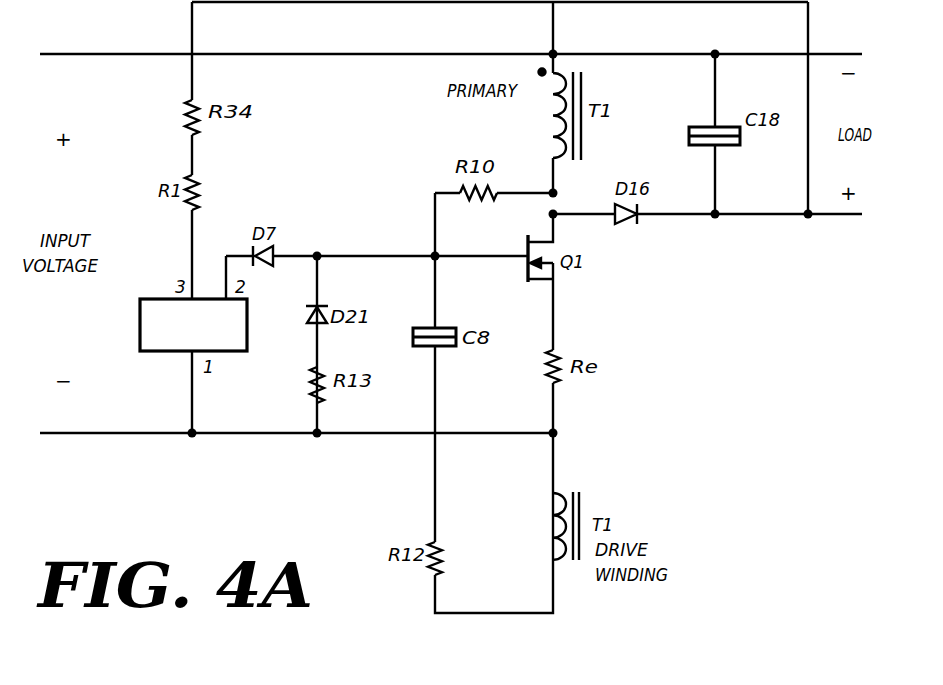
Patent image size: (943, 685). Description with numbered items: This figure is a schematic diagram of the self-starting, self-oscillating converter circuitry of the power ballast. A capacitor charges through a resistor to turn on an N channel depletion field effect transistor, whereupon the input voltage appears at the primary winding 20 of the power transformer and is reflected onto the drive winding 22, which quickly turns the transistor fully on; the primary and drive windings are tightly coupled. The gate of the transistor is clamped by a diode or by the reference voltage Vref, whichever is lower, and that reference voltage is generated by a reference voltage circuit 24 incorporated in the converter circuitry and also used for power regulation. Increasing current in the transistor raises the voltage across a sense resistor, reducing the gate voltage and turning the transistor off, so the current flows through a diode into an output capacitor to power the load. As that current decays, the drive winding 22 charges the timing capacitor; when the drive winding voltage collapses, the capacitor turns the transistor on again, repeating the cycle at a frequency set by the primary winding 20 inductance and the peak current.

The primary winding 20 is at (538, 118).
The drive winding 22 is at (583, 493).
The reference voltage circuit 24 is at (172, 354).